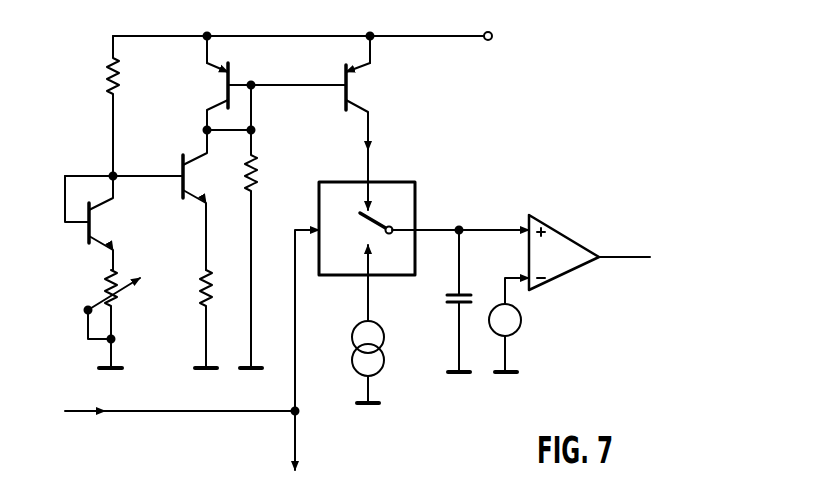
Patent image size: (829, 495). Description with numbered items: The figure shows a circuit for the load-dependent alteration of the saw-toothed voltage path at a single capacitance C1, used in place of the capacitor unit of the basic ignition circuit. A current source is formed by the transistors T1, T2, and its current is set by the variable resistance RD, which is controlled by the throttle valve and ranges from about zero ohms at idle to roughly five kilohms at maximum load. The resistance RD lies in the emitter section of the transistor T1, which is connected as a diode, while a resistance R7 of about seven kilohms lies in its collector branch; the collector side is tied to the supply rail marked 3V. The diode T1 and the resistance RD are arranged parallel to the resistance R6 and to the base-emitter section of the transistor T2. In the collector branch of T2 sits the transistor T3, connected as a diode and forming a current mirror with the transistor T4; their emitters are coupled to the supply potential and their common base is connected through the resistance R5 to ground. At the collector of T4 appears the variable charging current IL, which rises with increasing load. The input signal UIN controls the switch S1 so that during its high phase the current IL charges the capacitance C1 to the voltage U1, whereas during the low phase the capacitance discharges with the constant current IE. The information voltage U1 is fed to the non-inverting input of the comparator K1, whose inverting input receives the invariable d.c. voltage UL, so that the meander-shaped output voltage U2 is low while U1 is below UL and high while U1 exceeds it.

The +3V supply terminal 3V is at (327, 46).
The resistance R7 is at (99, 108).
The transistor T1 is at (97, 223).
The variable resistance RD is at (116, 319).
The transistor T2 is at (203, 200).
The resistance R6 is at (193, 319).
The transistor T3 is at (265, 85).
The resistance R5 is at (264, 226).
The transistor T4 is at (368, 109).
The charging current IL is at (425, 142).
The switch S1 is at (337, 185).
The input signal UIN is at (191, 350).
The discharge current IE is at (383, 363).
The information voltage U1 is at (466, 214).
The capacitance C1 is at (456, 296).
The d.c. voltage UL is at (518, 330).
The comparator K1 is at (588, 252).
The output voltage U2 is at (630, 274).